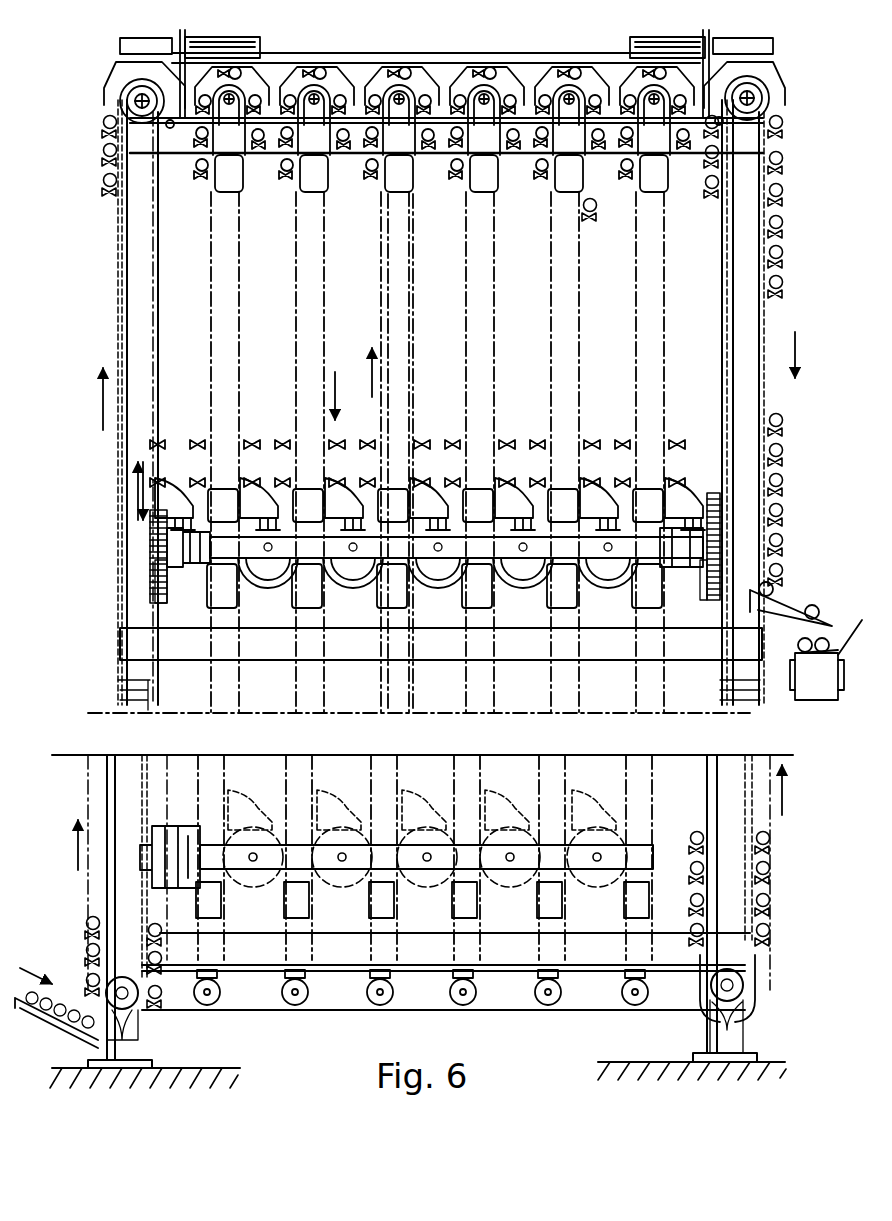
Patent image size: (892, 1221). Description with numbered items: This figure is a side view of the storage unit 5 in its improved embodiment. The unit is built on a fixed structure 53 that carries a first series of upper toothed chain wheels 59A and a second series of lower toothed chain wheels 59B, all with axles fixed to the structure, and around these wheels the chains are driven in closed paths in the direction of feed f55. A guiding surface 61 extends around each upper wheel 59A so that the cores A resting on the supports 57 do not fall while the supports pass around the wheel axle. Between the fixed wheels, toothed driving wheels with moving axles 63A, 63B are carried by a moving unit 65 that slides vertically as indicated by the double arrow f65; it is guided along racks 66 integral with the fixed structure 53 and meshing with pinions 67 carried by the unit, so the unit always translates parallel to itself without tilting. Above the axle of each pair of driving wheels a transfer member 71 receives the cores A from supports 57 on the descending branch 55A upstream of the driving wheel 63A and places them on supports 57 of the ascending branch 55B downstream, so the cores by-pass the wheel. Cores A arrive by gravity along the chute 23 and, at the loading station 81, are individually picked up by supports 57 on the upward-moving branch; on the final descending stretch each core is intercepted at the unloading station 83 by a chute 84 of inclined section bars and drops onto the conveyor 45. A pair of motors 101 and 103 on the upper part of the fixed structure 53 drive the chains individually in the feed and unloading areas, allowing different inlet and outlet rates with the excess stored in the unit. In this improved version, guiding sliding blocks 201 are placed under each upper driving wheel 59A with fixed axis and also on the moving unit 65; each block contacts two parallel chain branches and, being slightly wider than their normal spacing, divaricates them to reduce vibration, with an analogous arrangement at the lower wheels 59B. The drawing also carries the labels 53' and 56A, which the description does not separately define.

The storage unit 5 is at (800, 172).
The chute 23 is at (80, 1020).
The conveyor 45 is at (817, 675).
The fixed structure 53 is at (413, 580).
The lower guide rail 53' is at (446, 984).
The descending branch of the chain 55A is at (390, 318).
The ascending branch of the chain 55B is at (412, 332).
The chain run direction 56A is at (353, 377).
The supports 57 is at (112, 195).
The upper toothed chain wheels 59A is at (445, 65).
The lower toothed chain wheels 59B is at (390, 995).
The guiding surface 61 is at (118, 80).
The toothed driving wheel with moving axle 63A is at (603, 570).
The toothed driving wheel with moving axle 63B is at (421, 708).
The moving unit 65 is at (283, 558).
The racks 66 is at (158, 600).
The pinions 67 is at (150, 555).
The transfer member 71 is at (262, 500).
The loading station 81 is at (75, 985).
The unloading station 83 is at (838, 622).
The unloading chute 84 is at (790, 612).
The motor 101 is at (235, 37).
The motor 103 is at (690, 36).
The guiding sliding blocks 201 is at (310, 180).
The cores A is at (528, 85).
The direction of feed of the chain f55 is at (103, 405).
The double arrow of moving unit travel f65 is at (135, 496).